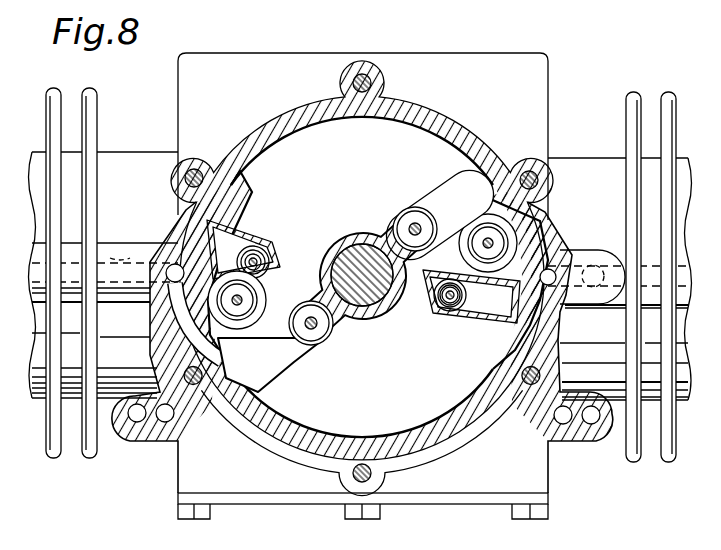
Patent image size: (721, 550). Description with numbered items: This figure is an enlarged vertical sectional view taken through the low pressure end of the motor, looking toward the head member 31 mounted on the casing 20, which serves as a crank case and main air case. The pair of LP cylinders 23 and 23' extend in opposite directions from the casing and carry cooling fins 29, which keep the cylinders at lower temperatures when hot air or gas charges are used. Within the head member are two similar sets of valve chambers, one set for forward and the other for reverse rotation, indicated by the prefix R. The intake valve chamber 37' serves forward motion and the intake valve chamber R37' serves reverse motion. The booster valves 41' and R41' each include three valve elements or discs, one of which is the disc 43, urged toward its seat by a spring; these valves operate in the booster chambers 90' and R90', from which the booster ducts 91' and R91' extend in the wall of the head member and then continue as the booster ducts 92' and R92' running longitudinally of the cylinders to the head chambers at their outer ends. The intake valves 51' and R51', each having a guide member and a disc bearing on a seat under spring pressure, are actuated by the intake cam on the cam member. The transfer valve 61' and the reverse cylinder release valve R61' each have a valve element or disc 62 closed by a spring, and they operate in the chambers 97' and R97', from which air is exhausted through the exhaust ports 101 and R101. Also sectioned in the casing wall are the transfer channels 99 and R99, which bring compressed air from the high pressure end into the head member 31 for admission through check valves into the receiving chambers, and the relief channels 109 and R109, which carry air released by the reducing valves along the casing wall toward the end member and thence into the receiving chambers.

The casing 20 is at (548, 112).
The LP cylinder 23 is at (620, 261).
The LP cylinder 23' is at (104, 253).
The cooling fins 29 is at (91, 117).
The head member 31 is at (438, 112).
The intake valve chamber 37' is at (362, 275).
The intake valve chamber R37' is at (314, 219).
The booster valve 41' is at (411, 219).
The booster valve R41' is at (291, 325).
The valve element 43 is at (432, 236).
The intake valve 51' is at (478, 243).
The intake valve R51' is at (249, 300).
The transfer valve 61' is at (467, 295).
The reverse cylinder release valve R61' is at (238, 262).
The valve element 62 is at (457, 303).
The booster chamber 90' is at (440, 215).
The booster chamber R90' is at (271, 365).
The booster duct 91' is at (544, 265).
The booster duct R91' is at (167, 312).
The booster duct 92' is at (592, 256).
The booster duct R92' is at (122, 242).
The transfer chamber 97' is at (471, 296).
The transfer chamber R97' is at (242, 249).
The transfer channel 99 is at (563, 422).
The transfer channel R99 is at (165, 420).
The exhaust port 101 is at (548, 318).
The exhaust port R101 is at (192, 228).
The relief channel 109 is at (591, 422).
The relief channel R109 is at (135, 420).